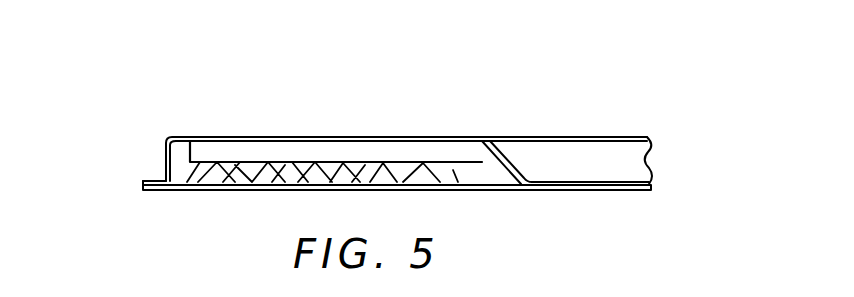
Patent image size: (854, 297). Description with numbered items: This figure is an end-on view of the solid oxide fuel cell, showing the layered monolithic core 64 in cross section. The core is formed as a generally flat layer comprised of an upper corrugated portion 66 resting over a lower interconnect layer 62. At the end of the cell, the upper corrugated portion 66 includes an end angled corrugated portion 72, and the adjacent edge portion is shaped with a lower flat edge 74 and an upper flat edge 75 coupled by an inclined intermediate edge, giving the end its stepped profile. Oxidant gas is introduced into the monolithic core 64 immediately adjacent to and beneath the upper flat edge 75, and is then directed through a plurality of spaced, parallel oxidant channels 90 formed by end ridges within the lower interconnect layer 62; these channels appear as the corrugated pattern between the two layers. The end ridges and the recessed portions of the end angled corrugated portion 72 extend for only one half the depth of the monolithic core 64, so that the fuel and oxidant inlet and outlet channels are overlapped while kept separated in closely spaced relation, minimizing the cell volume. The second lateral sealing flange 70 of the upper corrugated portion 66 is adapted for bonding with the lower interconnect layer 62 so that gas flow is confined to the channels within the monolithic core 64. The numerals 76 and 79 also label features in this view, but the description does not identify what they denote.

The lower interconnect layer 62 is at (298, 162).
The monolithic core 64 is at (142, 151).
The upper corrugated portion 66 is at (333, 133).
The second lateral sealing flange 70 is at (571, 178).
The end angled corrugated portion 72 is at (207, 154).
The lower flat edge 74 is at (513, 145).
The upper flat edge 75 is at (220, 141).
The layer end 76 is at (470, 167).
The cover extension 79 is at (612, 164).
The oxidant channels 90 is at (330, 191).